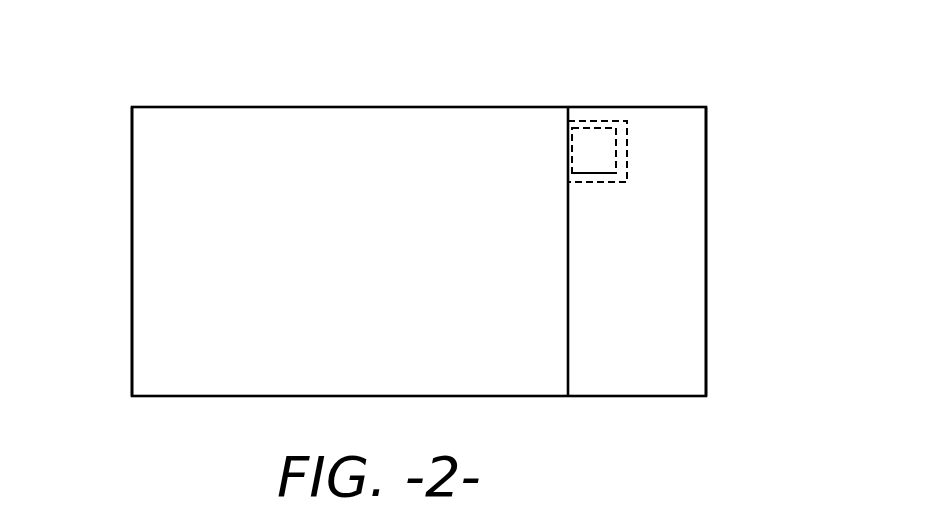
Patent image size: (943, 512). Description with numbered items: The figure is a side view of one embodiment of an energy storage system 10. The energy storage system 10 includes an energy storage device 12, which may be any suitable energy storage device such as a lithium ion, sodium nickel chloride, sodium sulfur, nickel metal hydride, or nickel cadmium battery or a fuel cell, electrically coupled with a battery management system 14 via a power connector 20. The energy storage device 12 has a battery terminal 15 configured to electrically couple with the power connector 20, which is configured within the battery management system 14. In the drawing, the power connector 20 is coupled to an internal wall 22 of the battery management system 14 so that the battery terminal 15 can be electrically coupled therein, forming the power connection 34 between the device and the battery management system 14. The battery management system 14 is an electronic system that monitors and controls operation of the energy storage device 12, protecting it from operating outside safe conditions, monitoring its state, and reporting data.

The energy storage system 10 is at (750, 114).
The energy storage device 12 is at (132, 186).
The battery management system 14 is at (706, 296).
The battery terminal 15 is at (589, 176).
The power connector 20 is at (604, 118).
The internal wall 22 is at (570, 350).
The power connection 34 is at (575, 96).